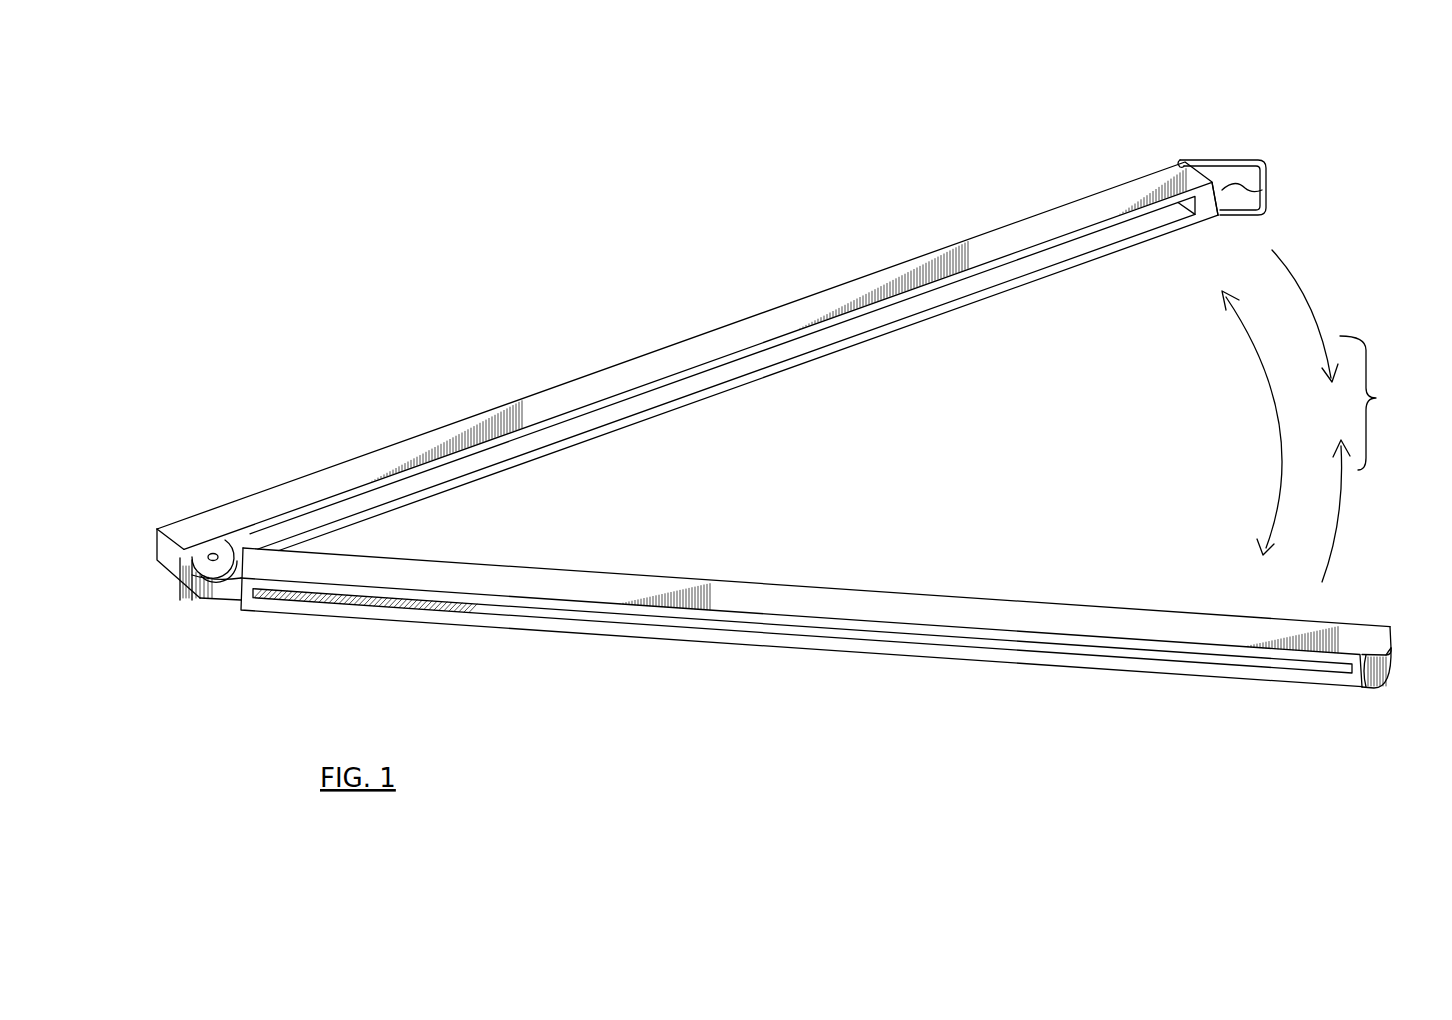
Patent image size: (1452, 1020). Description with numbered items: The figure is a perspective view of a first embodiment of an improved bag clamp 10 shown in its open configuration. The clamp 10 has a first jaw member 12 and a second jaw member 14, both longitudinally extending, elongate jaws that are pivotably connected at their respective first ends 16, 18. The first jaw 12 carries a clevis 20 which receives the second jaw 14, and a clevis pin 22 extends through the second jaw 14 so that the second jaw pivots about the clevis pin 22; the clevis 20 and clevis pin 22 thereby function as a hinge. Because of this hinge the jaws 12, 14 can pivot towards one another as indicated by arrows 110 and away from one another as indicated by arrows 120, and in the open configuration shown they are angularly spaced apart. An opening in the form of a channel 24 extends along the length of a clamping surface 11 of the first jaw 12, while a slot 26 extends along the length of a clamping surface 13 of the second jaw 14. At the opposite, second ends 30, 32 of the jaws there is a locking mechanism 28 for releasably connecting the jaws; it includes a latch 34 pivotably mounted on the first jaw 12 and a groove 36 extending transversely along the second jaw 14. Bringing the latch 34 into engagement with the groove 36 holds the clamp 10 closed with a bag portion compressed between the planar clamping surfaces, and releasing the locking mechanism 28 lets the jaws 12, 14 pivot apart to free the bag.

The bag clamp 10 is at (348, 254).
The clamping surface 11 is at (678, 400).
The first jaw member 12 is at (755, 327).
The clamping surface 13 is at (912, 592).
The second jaw member 14 is at (1338, 632).
The first end 16 is at (165, 548).
The first end 18 is at (200, 599).
The clevis 20 is at (185, 574).
The clevis pin 22 is at (211, 553).
The channel 24 is at (910, 312).
The slot 26 is at (668, 620).
The locking mechanism 28 is at (1297, 145).
The second end 30 is at (1262, 190).
The second end 32 is at (1392, 650).
The latch 34 is at (1212, 165).
The groove 36 is at (1362, 675).
The arrows 110 is at (1348, 416).
The arrows 120 is at (1276, 421).